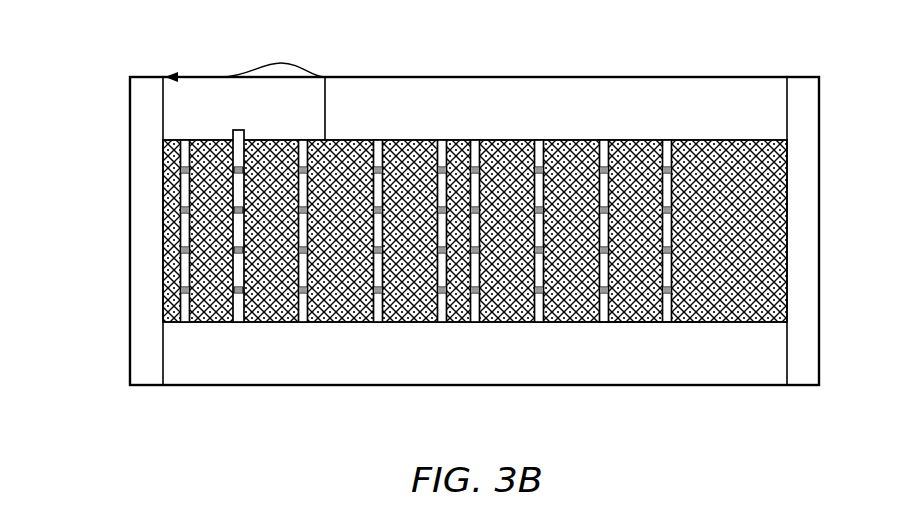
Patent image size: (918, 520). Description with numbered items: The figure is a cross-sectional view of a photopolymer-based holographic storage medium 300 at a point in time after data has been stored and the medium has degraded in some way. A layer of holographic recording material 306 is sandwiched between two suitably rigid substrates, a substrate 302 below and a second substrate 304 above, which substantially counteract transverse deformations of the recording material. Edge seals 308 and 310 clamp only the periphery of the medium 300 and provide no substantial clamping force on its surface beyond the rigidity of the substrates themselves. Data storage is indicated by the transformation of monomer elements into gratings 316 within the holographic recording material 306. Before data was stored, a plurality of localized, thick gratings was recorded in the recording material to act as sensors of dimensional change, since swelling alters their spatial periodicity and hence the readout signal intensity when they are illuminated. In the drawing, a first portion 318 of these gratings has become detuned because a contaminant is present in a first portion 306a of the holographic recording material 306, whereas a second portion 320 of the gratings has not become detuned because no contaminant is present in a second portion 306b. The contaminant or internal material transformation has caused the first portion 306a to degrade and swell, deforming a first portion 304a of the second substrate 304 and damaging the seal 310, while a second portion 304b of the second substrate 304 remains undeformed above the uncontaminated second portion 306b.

The photopolymer-based holographic storage medium 300 is at (84, 150).
The substrate 302 is at (455, 369).
The second substrate 304 is at (170, 48).
The first portion of second substrate 304a is at (220, 114).
The second portion of second substrate 304b is at (534, 122).
The holographic recording material 306 is at (737, 139).
The first portion of holographic recording material 306a is at (170, 398).
The second portion of holographic recording material 306b is at (332, 398).
The edge seal 308 is at (820, 187).
The edge seal 310 is at (130, 278).
The gratings 316 is at (636, 323).
The first portion of gratings 318 is at (238, 310).
The second portion of gratings 320 is at (378, 139).